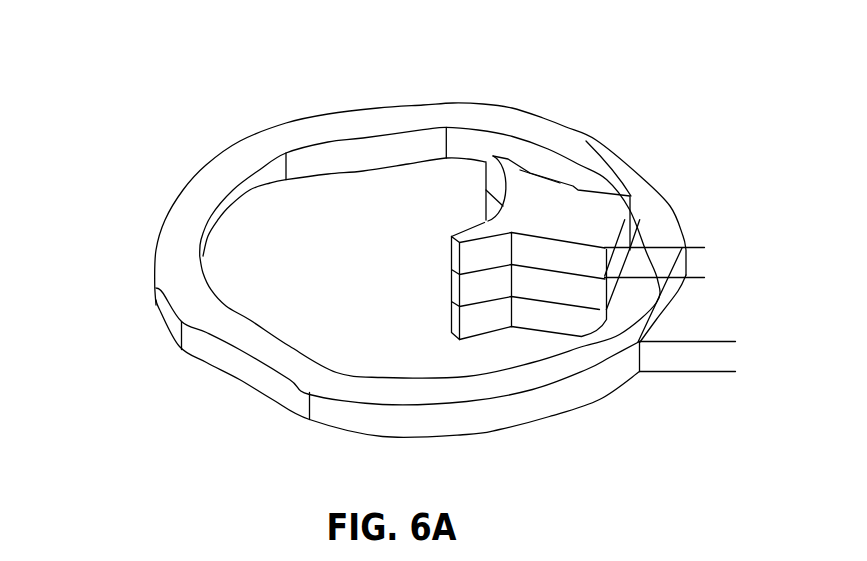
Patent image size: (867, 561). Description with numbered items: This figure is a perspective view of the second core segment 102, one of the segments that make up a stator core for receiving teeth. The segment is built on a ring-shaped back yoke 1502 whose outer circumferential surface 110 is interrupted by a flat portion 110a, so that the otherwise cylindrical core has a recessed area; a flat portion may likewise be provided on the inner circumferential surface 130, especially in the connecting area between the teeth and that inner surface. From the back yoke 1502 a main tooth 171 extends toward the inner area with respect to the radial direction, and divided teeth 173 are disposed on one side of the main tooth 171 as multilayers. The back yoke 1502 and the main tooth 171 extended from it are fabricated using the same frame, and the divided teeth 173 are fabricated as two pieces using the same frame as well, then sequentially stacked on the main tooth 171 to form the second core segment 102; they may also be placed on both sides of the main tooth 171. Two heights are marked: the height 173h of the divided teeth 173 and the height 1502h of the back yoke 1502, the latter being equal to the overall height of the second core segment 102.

The second core segment 102 is at (413, 266).
The back yoke 1502 is at (185, 192).
The outer circumferential surface 110 is at (154, 298).
The flat portion 110a is at (234, 362).
The inner circumferential surface 130 is at (350, 148).
The divided teeth 173 is at (551, 285).
The main tooth 171 is at (562, 278).
The height of the divided teeth 173h is at (692, 198).
The height of the back yoke 1502h is at (724, 292).